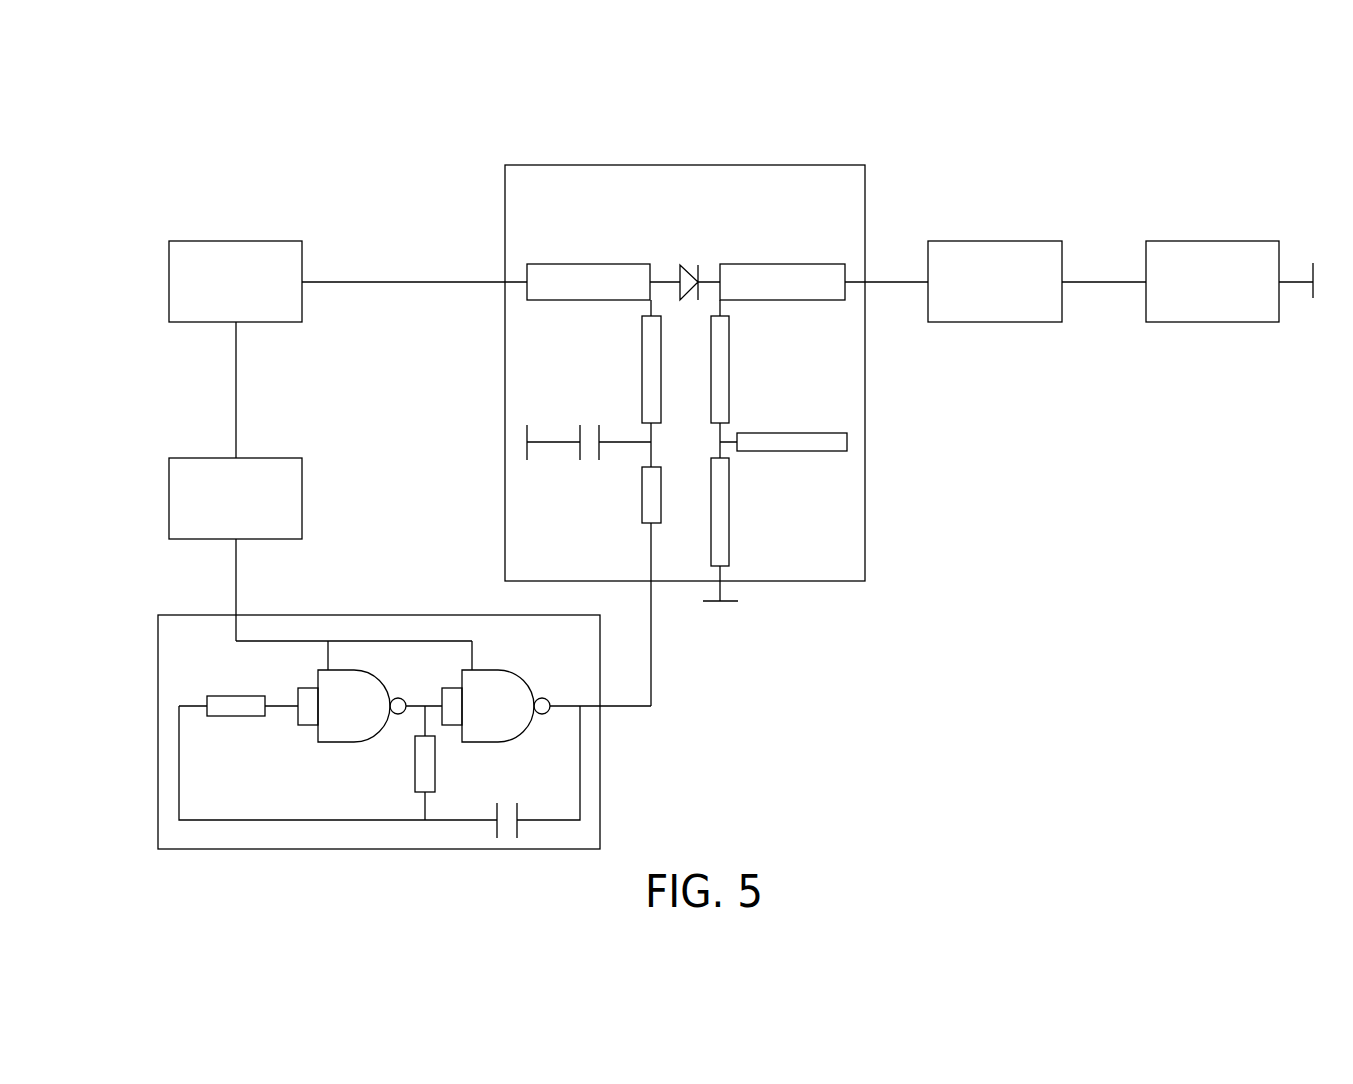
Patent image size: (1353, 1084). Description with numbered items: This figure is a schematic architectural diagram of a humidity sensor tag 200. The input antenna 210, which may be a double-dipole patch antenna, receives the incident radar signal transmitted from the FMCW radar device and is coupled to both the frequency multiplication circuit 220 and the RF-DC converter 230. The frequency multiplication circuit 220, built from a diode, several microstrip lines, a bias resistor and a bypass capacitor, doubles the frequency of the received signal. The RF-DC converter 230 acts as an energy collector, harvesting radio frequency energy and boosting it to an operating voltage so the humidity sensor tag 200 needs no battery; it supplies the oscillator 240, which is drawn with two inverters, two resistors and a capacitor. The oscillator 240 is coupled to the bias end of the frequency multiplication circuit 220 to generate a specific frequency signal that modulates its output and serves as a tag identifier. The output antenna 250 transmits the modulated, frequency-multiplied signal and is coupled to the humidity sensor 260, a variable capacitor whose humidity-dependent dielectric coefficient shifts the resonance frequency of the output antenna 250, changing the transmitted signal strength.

The humidity sensor tag 200 is at (122, 118).
The input antenna 210 is at (197, 240).
The frequency multiplication circuit 220 is at (532, 165).
The RF-DC converter 230 is at (197, 458).
The oscillator 240 is at (187, 615).
The output antenna 250 is at (1033, 241).
The humidity sensor 260 is at (1251, 241).